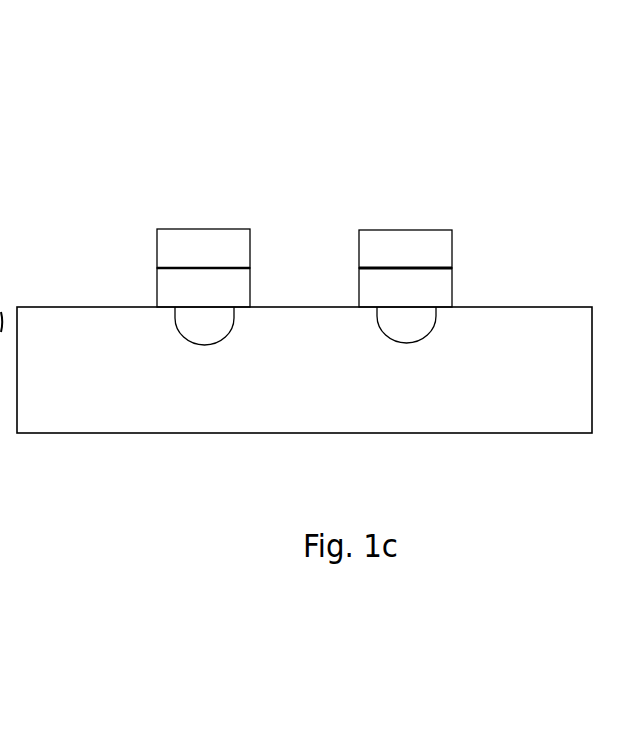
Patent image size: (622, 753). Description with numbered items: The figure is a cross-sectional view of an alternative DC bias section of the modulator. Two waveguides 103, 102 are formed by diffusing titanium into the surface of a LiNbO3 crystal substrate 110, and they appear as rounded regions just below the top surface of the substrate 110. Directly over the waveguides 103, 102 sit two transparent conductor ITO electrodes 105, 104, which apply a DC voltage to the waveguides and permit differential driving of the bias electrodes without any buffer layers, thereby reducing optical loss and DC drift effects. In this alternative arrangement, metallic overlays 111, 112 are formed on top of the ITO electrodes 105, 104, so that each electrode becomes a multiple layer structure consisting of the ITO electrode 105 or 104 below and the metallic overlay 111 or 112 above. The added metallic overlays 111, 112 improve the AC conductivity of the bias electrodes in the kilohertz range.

The LiNbO3 crystal substrate 110 is at (558, 310).
The metallic overlay 111 is at (175, 228).
The metallic overlay 112 is at (372, 229).
The transparent conductor ITO electrode 105 is at (157, 284).
The transparent conductor ITO electrode 104 is at (453, 288).
The waveguide 103 is at (173, 328).
The waveguide 102 is at (437, 327).